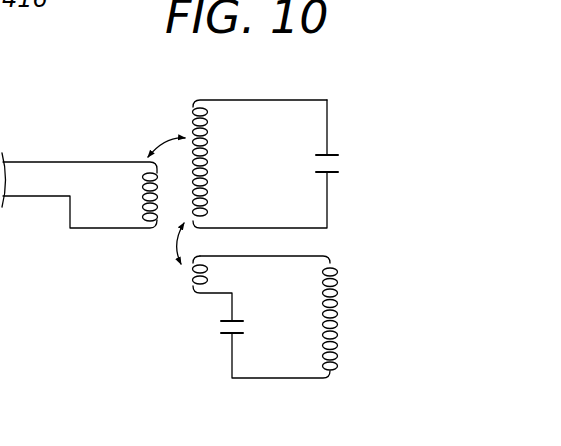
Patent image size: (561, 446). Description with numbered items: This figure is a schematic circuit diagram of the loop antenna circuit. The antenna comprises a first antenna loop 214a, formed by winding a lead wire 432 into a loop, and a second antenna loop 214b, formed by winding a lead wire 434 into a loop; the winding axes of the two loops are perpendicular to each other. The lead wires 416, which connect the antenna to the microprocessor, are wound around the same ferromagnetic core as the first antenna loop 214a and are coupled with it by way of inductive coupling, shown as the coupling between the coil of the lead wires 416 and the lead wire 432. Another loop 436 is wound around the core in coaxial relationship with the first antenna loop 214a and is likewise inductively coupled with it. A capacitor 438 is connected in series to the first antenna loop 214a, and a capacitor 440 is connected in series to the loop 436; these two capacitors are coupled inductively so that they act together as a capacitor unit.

The lead wires 416 is at (58, 195).
The first antenna loop 214a is at (274, 133).
The second antenna loop 214b is at (282, 301).
The lead wire 432 is at (194, 107).
The lead wire 434 is at (335, 308).
The loop 436 is at (193, 274).
The capacitor 438 is at (335, 155).
The capacitor 440 is at (220, 328).